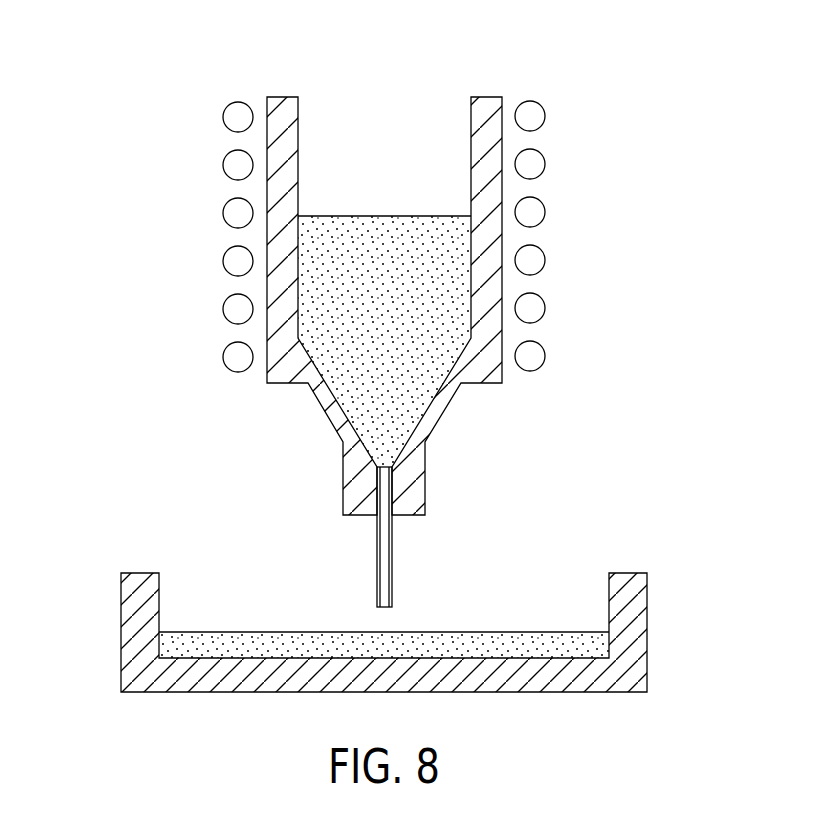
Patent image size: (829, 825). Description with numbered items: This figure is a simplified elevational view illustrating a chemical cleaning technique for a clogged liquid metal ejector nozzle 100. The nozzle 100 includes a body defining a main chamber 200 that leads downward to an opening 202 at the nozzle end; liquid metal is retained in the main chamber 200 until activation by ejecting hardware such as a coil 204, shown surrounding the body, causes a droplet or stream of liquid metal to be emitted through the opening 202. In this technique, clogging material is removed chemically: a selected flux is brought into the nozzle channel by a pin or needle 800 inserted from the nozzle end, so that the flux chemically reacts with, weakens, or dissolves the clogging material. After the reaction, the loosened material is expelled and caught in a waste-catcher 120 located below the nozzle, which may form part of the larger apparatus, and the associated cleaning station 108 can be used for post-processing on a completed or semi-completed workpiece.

The nozzle 100 is at (558, 145).
The main chamber 200 is at (289, 97).
The opening 202 is at (375, 437).
The coil 204 is at (545, 261).
The pin or needle 800 is at (392, 552).
The cleaning station 108 is at (680, 634).
The waste-catcher 120 is at (132, 638).